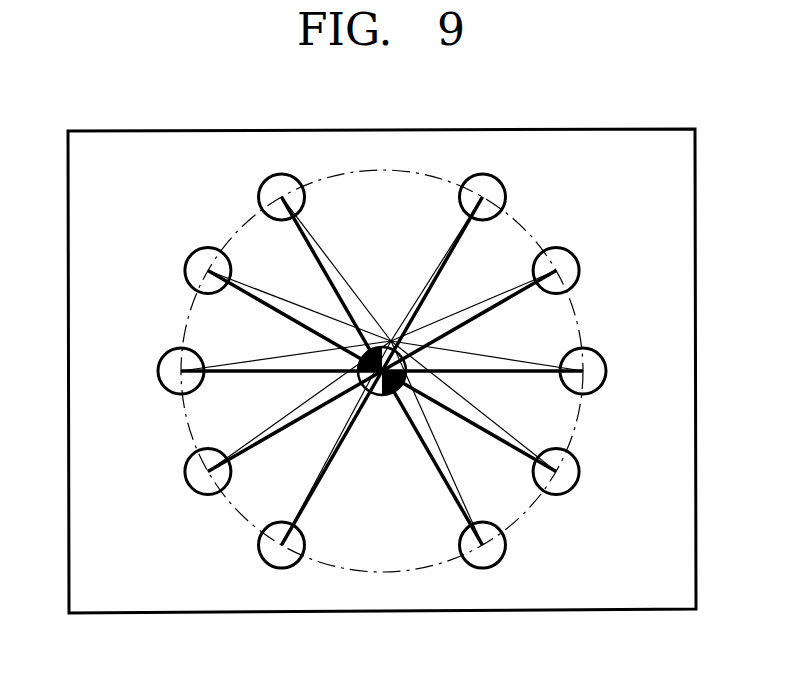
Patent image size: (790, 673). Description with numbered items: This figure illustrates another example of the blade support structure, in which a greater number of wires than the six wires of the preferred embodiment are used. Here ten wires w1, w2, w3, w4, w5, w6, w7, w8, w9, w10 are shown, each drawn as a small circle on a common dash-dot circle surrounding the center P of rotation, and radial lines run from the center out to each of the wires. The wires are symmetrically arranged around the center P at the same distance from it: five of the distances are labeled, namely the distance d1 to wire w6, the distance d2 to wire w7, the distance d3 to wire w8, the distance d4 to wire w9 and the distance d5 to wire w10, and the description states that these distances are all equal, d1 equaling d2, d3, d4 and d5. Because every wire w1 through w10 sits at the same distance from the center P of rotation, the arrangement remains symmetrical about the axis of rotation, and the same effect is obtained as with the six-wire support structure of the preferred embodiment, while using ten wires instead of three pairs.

The wire w1 is at (504, 196).
The wire w2 is at (577, 269).
The wire w3 is at (605, 368).
The wire w4 is at (577, 475).
The wire w5 is at (504, 548).
The wire w6 is at (260, 196).
The wire w7 is at (186, 269).
The wire w8 is at (159, 369).
The wire w9 is at (187, 476).
The wire w10 is at (255, 548).
The center of rotation P is at (391, 341).
The distance d1 is at (337, 269).
The distance d2 is at (299, 306).
The distance d3 is at (286, 356).
The distance d4 is at (299, 406).
The distance d5 is at (337, 443).